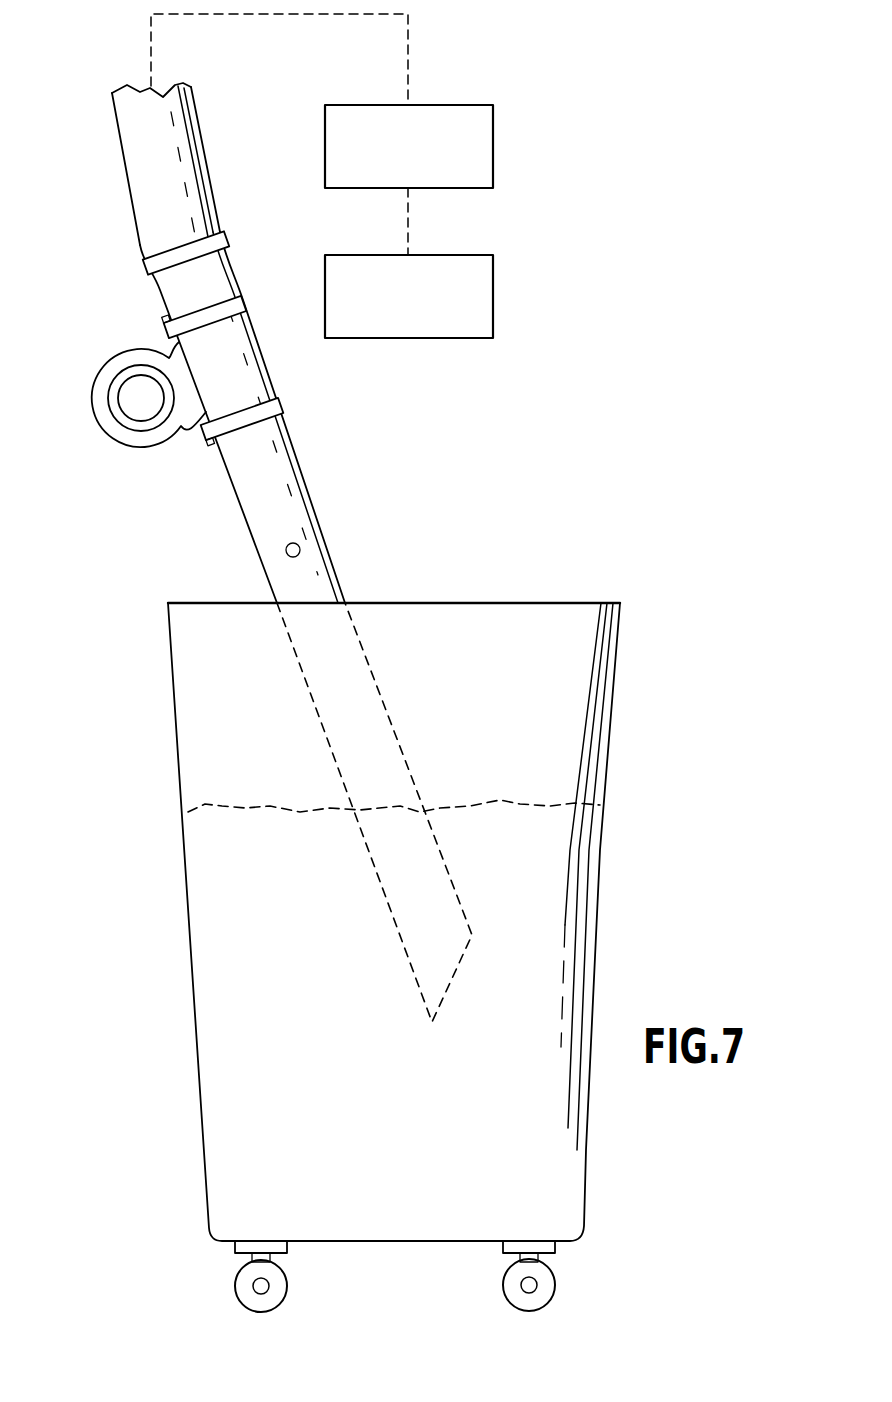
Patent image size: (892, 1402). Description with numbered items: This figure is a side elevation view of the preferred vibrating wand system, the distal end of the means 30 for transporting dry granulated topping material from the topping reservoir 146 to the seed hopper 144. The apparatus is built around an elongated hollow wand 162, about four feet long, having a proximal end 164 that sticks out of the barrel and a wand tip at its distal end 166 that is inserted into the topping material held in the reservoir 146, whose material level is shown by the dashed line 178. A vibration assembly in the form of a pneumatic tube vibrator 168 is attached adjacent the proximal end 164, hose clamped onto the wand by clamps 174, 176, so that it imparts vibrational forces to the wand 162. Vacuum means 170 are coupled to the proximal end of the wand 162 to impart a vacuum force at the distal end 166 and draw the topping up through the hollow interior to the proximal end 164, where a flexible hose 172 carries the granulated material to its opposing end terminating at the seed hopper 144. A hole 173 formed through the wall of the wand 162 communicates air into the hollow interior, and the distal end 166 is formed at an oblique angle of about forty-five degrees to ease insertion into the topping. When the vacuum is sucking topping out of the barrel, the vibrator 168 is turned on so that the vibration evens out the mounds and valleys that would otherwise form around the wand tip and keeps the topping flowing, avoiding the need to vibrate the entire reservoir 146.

The means for transporting the dry topping material 30 is at (331, 663).
The seed hopper 144 is at (537, 278).
The topping reservoir 146 is at (177, 730).
The elongated hollow wand 162 is at (300, 468).
The proximal end 164 is at (230, 275).
The distal end 166 is at (392, 918).
The pneumatic tube vibrator 168 is at (118, 352).
The vacuum means 170 is at (532, 128).
The flexible hose 172 is at (118, 158).
The hole 173 is at (300, 550).
The clamp 174 is at (247, 305).
The clamp 176 is at (287, 403).
The dashed line 178 is at (500, 800).